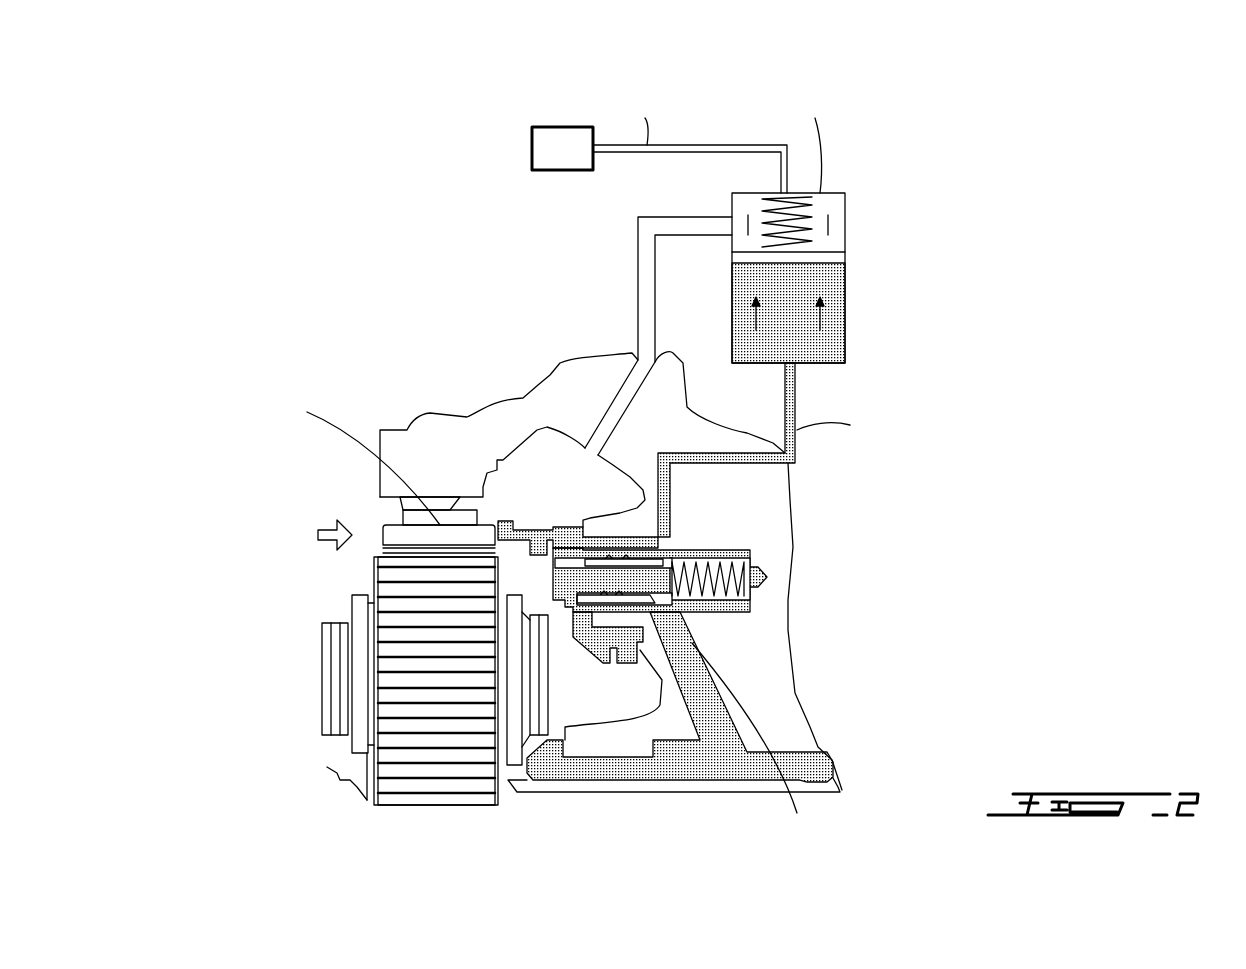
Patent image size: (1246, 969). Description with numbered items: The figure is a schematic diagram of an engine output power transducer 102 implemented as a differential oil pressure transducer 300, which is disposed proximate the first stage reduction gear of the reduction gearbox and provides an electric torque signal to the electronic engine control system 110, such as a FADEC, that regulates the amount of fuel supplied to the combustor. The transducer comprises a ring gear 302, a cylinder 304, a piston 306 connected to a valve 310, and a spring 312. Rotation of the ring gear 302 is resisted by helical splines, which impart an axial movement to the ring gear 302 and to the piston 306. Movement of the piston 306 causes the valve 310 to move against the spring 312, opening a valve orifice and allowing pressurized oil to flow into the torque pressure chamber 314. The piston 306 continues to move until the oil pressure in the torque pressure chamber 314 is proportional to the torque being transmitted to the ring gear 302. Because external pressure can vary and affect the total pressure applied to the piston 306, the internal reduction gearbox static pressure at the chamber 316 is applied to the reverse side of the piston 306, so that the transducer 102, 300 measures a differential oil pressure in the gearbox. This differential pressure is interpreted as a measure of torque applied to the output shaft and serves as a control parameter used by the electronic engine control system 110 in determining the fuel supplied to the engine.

The engine output power transducer 102 is at (667, 449).
The differential oil pressure transducer 300 is at (1005, 668).
The electronic engine control system 110 is at (562, 148).
The ring gear 302 is at (380, 557).
The cylinder 304 is at (535, 532).
The piston 306 is at (592, 638).
The valve 310 is at (745, 603).
The spring 312 is at (768, 577).
The torque pressure chamber 314 is at (617, 583).
The RGB static pressure chamber 316 is at (548, 462).